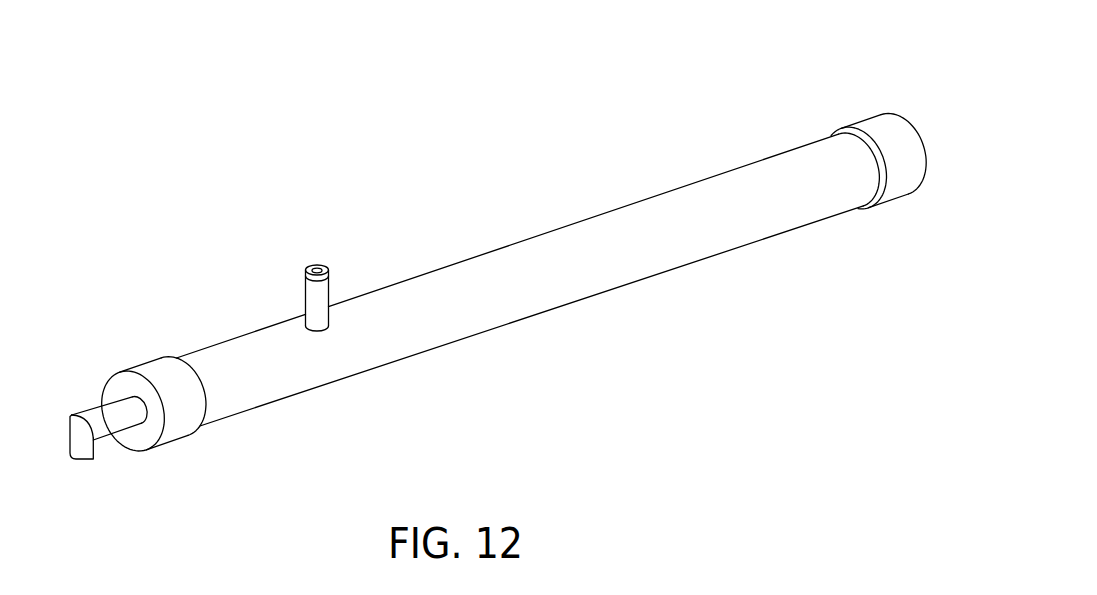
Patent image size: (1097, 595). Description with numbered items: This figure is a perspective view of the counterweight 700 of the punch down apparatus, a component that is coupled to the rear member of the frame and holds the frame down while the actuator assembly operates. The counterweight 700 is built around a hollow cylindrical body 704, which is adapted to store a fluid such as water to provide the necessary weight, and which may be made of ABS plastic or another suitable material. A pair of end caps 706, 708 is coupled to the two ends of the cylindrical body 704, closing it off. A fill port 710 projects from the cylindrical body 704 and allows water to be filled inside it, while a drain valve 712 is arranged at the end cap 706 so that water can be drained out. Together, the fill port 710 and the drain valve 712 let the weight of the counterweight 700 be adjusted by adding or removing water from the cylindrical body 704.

The counterweight 700 is at (697, 112).
The hollow cylindrical body 704 is at (575, 282).
The end cap 706 is at (187, 423).
The end cap 708 is at (900, 165).
The fill port 710 is at (329, 287).
The drain valve 712 is at (97, 412).